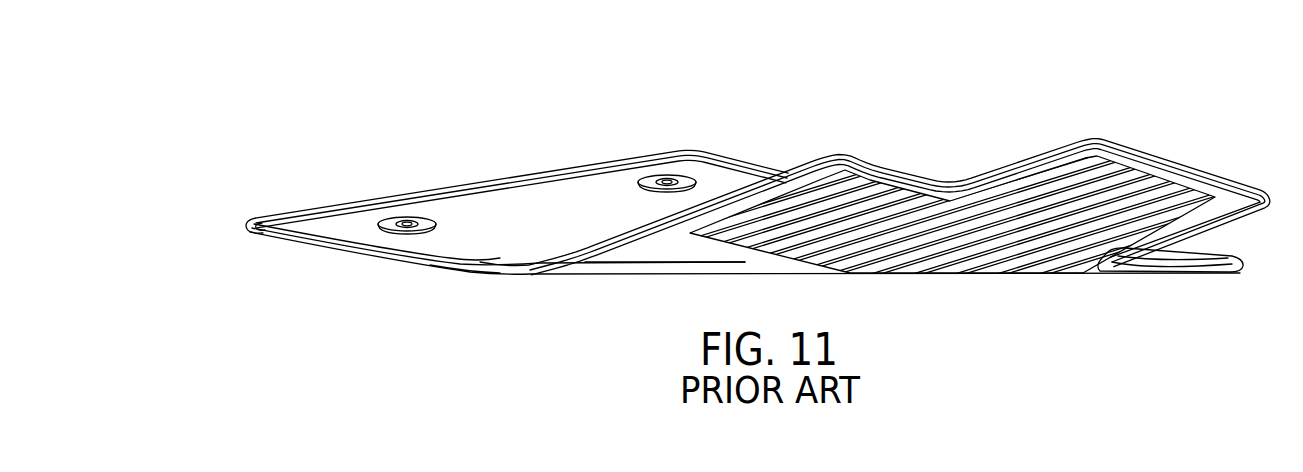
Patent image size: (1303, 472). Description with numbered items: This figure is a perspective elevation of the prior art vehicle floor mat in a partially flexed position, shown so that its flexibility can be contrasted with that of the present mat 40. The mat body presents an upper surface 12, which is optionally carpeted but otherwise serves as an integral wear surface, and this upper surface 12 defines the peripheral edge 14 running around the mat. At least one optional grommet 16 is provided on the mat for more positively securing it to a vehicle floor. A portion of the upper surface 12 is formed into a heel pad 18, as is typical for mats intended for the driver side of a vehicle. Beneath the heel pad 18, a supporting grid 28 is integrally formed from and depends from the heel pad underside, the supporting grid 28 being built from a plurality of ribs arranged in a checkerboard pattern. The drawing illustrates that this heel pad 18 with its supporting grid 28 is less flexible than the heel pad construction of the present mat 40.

The present mat 40 is at (537, 160).
The upper surface 12 is at (592, 196).
The peripheral edge 14 is at (473, 273).
The grommet 16 is at (405, 220).
The heel pad 18 is at (1124, 262).
The supporting grid 28 is at (990, 265).